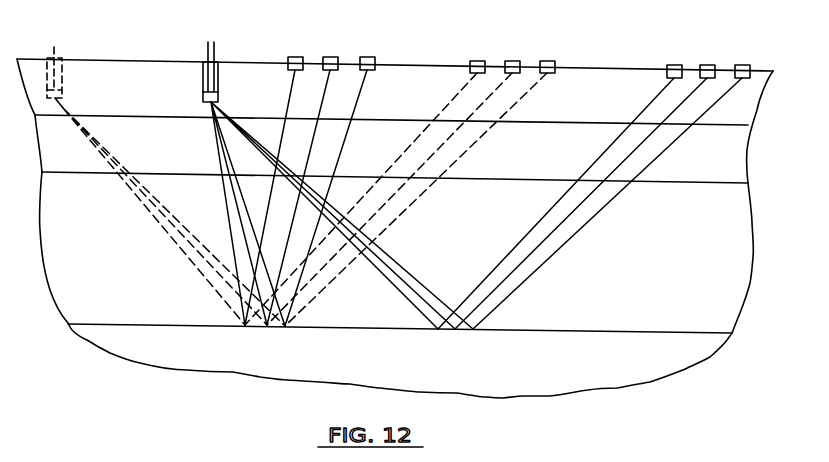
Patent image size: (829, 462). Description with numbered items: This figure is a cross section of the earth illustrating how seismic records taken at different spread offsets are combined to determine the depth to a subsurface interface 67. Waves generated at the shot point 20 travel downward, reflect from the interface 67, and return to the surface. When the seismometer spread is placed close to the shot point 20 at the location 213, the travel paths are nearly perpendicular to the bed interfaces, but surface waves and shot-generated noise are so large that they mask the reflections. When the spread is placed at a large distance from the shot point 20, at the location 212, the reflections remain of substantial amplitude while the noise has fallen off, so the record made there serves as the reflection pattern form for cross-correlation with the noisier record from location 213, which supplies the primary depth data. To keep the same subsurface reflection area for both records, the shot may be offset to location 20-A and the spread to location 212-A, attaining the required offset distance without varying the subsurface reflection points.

The shot point 20 is at (216, 60).
The shot location 20-A is at (50, 60).
The spread location 213 is at (380, 46).
The spread location 212-A is at (563, 48).
The spread location 212 is at (760, 55).
The interface 67 is at (572, 330).